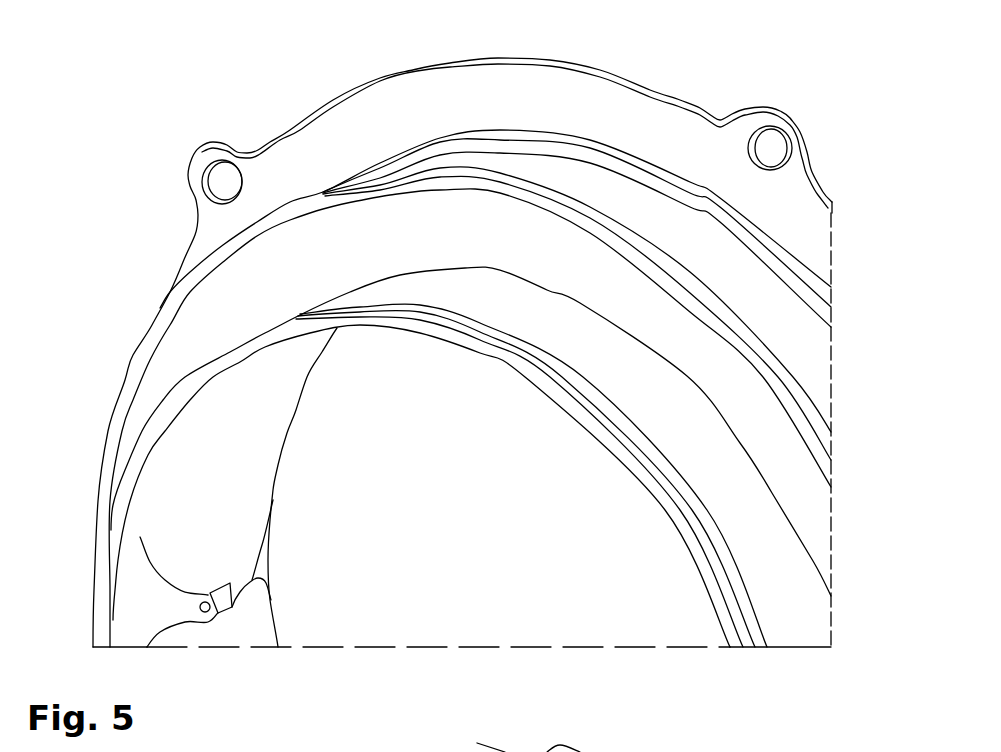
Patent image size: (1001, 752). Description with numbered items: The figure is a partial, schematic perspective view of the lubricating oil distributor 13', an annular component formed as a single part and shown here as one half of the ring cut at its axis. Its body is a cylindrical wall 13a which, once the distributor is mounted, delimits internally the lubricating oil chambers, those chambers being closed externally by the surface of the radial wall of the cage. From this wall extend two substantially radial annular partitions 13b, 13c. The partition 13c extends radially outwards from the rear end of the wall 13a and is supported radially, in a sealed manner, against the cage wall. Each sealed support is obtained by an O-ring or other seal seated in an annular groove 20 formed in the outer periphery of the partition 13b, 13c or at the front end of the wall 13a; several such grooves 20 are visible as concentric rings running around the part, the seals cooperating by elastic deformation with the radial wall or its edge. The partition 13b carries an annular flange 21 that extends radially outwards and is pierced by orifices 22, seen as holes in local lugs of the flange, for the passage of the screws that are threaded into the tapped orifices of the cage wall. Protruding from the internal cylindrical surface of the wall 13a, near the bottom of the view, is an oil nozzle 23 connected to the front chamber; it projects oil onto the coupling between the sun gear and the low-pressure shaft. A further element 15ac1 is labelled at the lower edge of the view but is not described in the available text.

The lubricating oil distributor 13' is at (516, 356).
The cylindrical wall 13a is at (790, 609).
The annular partition 13b is at (803, 360).
The annular partition 13c is at (757, 434).
The annular groove 20 is at (565, 193).
The annular flange 21 is at (652, 132).
The orifices 22 is at (220, 177).
The oil nozzle 23 is at (243, 597).
The adjacent component 15ac1 is at (432, 751).